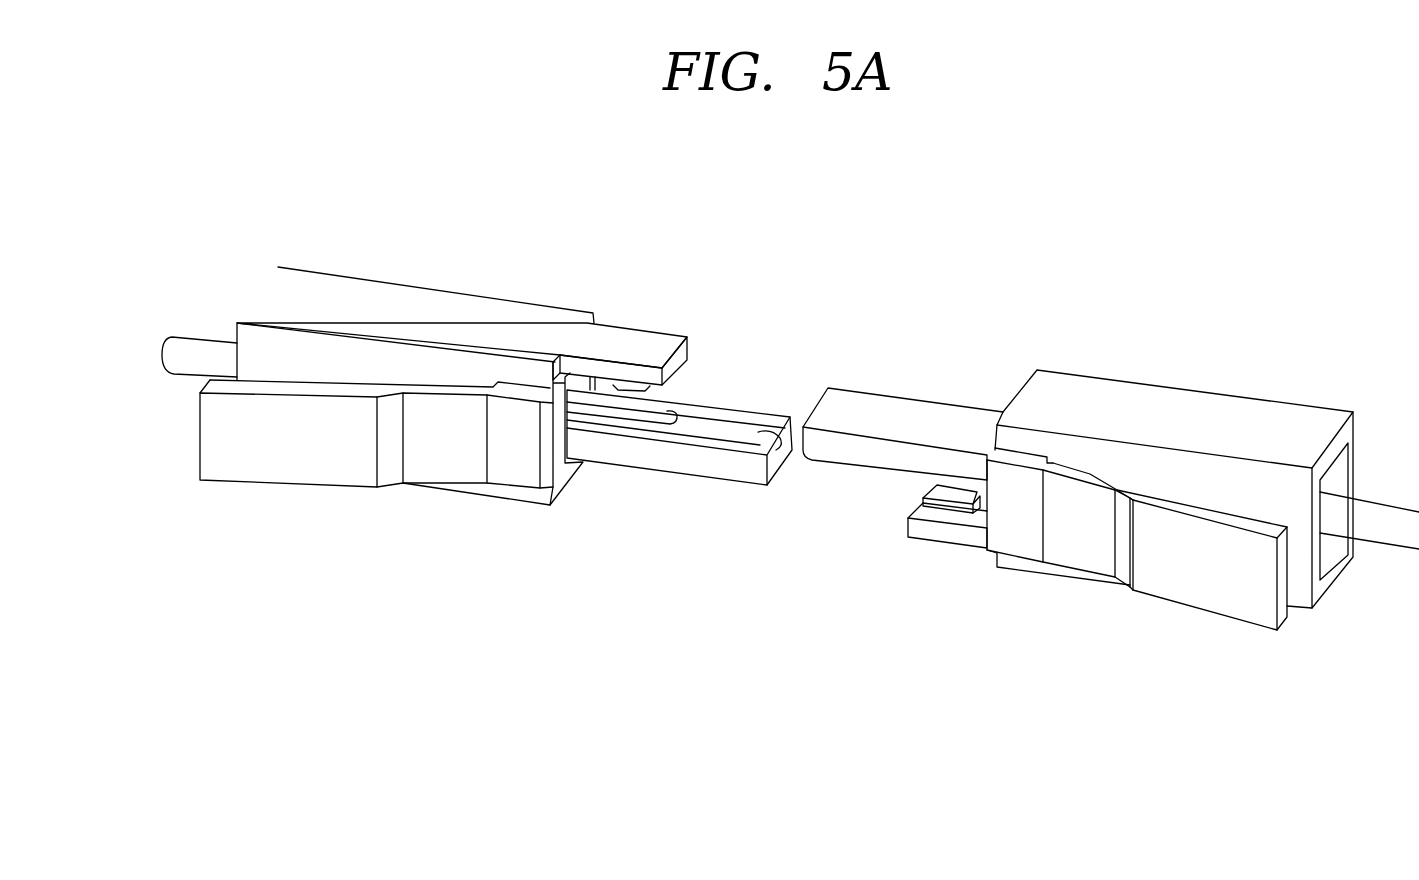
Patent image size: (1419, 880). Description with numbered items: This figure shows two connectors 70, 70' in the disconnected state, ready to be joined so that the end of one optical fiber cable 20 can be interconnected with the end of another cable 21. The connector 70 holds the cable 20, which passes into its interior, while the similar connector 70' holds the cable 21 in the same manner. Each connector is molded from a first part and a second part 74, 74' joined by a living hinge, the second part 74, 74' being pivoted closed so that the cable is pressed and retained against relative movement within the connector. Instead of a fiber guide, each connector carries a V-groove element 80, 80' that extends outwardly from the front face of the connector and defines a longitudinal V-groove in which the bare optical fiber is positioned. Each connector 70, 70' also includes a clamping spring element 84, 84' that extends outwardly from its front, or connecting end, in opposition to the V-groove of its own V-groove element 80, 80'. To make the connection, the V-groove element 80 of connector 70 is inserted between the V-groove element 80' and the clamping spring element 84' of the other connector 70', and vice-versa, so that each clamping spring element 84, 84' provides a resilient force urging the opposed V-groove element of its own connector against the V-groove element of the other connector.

The optical fiber cable 20 is at (1392, 515).
The cable 21 is at (197, 352).
The connector 70 is at (1170, 442).
The connector 70' is at (448, 344).
The second part 74 is at (1137, 577).
The second part 74' is at (335, 442).
The V-groove element 80 is at (903, 395).
The V-groove element 80' is at (679, 477).
The clamping spring element 84 is at (938, 556).
The clamping spring element 84' is at (620, 314).